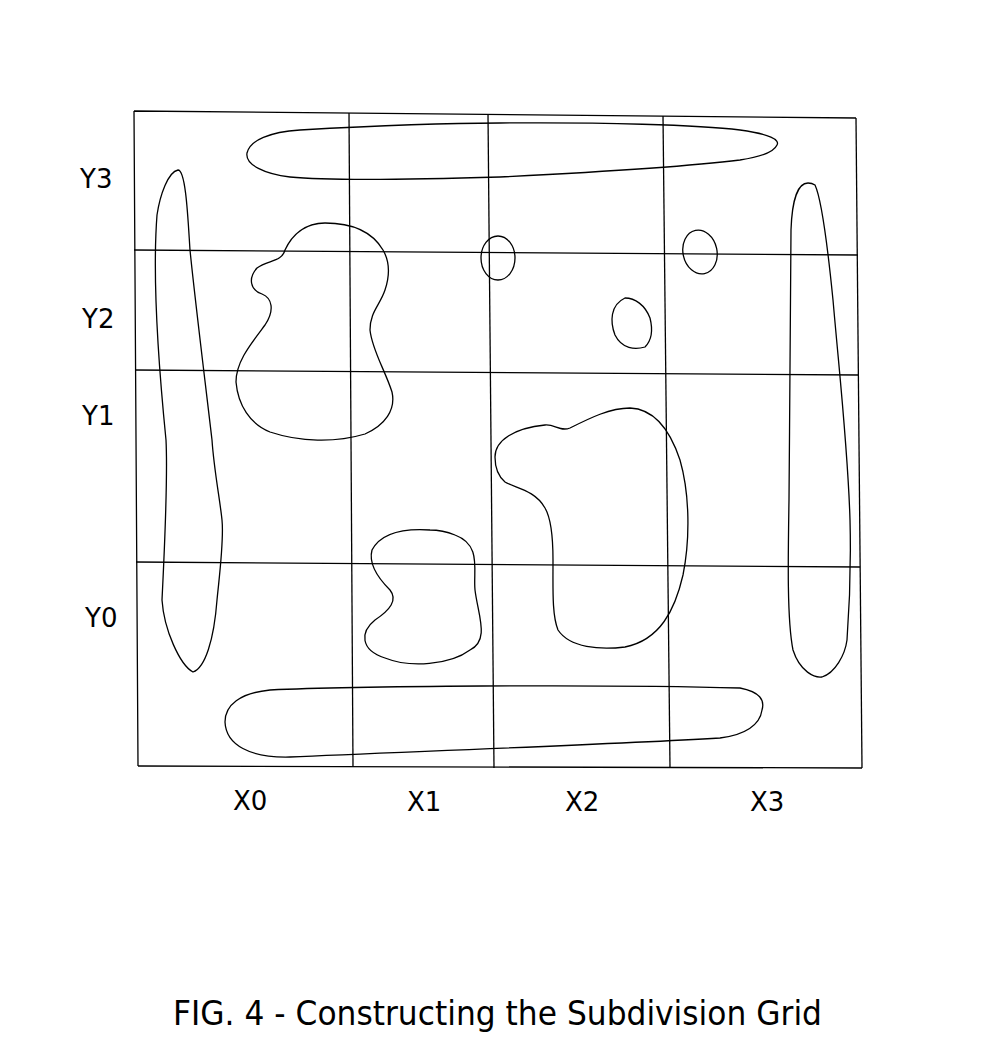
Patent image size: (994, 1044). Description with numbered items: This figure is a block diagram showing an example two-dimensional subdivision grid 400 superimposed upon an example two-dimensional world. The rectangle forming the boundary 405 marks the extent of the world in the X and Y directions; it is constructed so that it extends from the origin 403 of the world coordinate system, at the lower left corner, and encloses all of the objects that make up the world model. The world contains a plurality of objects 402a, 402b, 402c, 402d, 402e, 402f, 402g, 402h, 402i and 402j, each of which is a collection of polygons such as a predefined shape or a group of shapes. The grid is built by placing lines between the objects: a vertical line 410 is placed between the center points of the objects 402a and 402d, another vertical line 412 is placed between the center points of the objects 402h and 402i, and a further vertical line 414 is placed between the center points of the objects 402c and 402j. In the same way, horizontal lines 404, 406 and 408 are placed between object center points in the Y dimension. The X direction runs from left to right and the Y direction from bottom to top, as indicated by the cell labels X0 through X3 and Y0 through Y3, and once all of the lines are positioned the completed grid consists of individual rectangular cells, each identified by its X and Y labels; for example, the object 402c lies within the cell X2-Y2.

The 2D subdivision grid 400 is at (92, 82).
The origin 403 is at (138, 767).
The horizontal grid line Y0/Y1 404 is at (136, 562).
The boundary 405 is at (862, 768).
The horizontal grid line Y1/Y2 406 is at (135, 370).
The horizontal grid line Y2/Y3 408 is at (134, 250).
The vertical line 410 is at (353, 768).
The vertical grid line X1/X2 412 is at (494, 768).
The vertical grid line X2/X3 414 is at (670, 768).
The object 402a is at (314, 331).
The object 402b is at (591, 528).
The object 402c is at (648, 338).
The object 402d is at (423, 597).
The object 402e is at (188, 421).
The object 402f is at (819, 430).
The object 402g is at (512, 151).
The object 402h is at (494, 721).
The object 402i is at (516, 252).
The object 402j is at (686, 254).